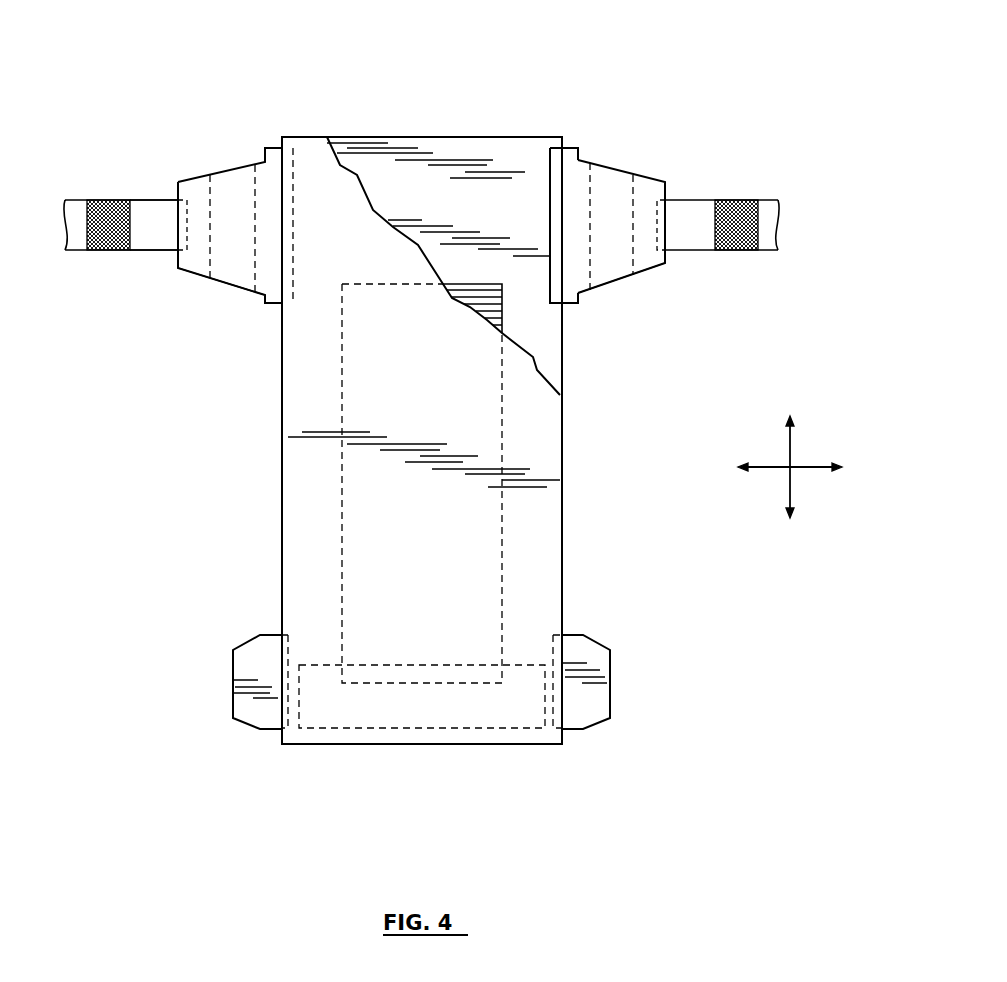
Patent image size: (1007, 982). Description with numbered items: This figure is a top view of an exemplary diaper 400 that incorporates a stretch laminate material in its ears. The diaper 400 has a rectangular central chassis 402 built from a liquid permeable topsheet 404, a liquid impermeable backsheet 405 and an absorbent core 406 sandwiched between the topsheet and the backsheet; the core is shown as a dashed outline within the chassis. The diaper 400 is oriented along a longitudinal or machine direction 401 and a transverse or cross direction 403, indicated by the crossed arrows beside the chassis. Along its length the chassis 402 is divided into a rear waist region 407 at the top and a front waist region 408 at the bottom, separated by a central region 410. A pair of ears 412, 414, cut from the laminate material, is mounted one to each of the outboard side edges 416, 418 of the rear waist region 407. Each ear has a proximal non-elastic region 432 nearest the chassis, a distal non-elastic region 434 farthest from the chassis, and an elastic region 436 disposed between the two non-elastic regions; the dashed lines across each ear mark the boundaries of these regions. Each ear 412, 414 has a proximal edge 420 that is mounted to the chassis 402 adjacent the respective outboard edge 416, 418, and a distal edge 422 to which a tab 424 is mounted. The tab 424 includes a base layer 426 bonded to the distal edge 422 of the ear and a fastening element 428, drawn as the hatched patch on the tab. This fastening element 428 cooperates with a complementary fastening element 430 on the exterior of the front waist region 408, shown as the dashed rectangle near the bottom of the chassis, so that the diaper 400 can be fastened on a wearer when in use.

The diaper 400 is at (757, 57).
The longitudinal or machine direction 401 is at (793, 490).
The central chassis 402 is at (282, 552).
The transverse or cross direction 403 is at (812, 466).
The liquid permeable topsheet 404 is at (307, 480).
The liquid impermeable backsheet 405 is at (495, 145).
The absorbent core 406 is at (503, 313).
The rear waist region 407 is at (268, 317).
The front waist region 408 is at (584, 624).
The central region 410 is at (584, 494).
The ear 412 is at (232, 178).
The ear 414 is at (596, 186).
The outboard side edge 416 is at (281, 333).
The outboard side edge 418 is at (563, 317).
The proximal edge 420 is at (298, 167).
The distal edge 422 is at (177, 267).
The tab 424 is at (140, 200).
The base layer 426 is at (157, 218).
The fastening element 428 is at (105, 200).
The complementary fastening element 430 is at (525, 715).
The proximal non-elastic region 432 is at (271, 160).
The distal non-elastic region 434 is at (196, 196).
The elastic region 436 is at (236, 280).